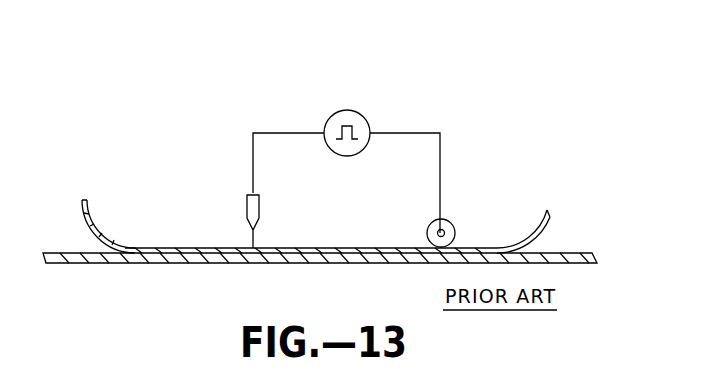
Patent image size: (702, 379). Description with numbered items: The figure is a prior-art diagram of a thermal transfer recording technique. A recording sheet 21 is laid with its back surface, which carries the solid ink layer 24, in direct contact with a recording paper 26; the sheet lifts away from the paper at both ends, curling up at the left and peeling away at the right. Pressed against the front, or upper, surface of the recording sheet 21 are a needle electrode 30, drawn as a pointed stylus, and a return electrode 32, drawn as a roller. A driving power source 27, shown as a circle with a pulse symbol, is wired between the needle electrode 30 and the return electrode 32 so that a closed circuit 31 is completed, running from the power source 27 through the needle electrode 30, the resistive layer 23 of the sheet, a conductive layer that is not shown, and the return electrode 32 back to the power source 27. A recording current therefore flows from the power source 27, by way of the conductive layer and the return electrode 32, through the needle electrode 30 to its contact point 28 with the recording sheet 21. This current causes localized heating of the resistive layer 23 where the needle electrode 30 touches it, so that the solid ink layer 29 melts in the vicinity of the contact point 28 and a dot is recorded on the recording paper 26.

The recording sheet 21 is at (129, 226).
The resistive layer 23 is at (530, 236).
The solid ink layer 24 is at (552, 216).
The recording paper 26 is at (580, 253).
The driving power source 27 is at (362, 113).
The contact point 28 is at (260, 248).
The solid ink layer 29 is at (243, 258).
The needle electrode 30 is at (247, 210).
The closed circuit 31 is at (230, 104).
The return electrode 32 is at (451, 228).